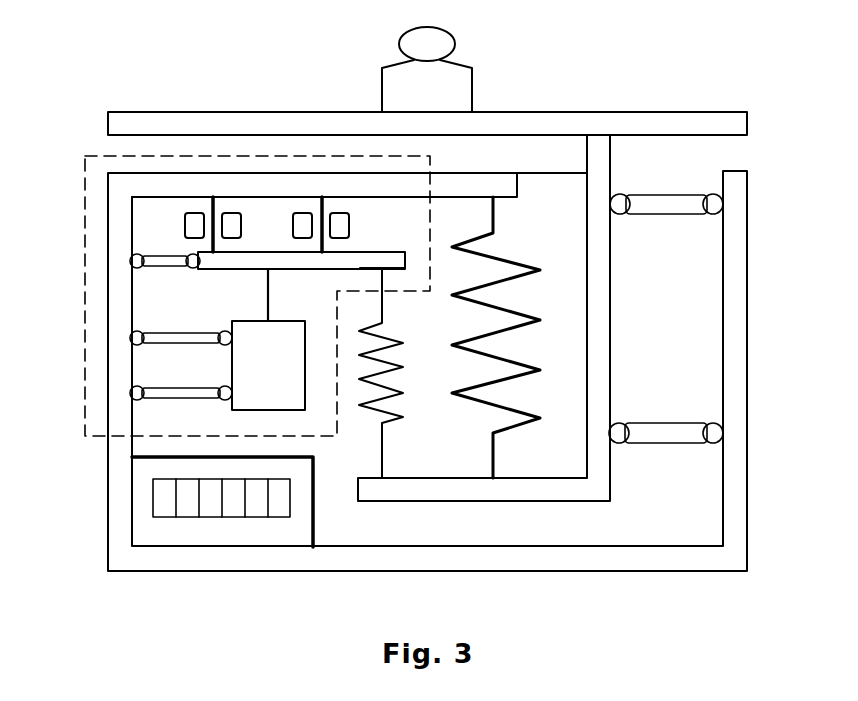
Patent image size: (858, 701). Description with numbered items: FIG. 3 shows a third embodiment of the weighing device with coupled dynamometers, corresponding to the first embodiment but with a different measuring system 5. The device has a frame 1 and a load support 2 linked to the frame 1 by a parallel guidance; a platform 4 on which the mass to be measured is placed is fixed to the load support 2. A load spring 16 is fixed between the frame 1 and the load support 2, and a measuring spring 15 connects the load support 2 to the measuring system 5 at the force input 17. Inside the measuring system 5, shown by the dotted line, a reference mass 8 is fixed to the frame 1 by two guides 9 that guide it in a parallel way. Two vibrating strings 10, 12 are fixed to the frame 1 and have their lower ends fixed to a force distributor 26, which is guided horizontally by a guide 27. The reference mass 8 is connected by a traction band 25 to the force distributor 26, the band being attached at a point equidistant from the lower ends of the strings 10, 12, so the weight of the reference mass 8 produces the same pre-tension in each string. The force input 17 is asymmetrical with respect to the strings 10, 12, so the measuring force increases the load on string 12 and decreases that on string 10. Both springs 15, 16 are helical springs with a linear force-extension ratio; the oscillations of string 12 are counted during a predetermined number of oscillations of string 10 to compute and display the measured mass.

The frame 1 is at (738, 322).
The load support 2 is at (598, 300).
The platform 4 is at (636, 120).
The measuring system 5 is at (153, 313).
The reference mass 8 is at (263, 382).
The guides 9 is at (160, 340).
The vibrating string 10 is at (215, 230).
The second vibrating string 12 is at (322, 230).
The measuring spring 15 is at (383, 387).
The load spring 16 is at (497, 353).
The force input 17 is at (383, 272).
The traction band 25 is at (270, 288).
The force distributor 26 is at (367, 257).
The guide 27 is at (163, 262).